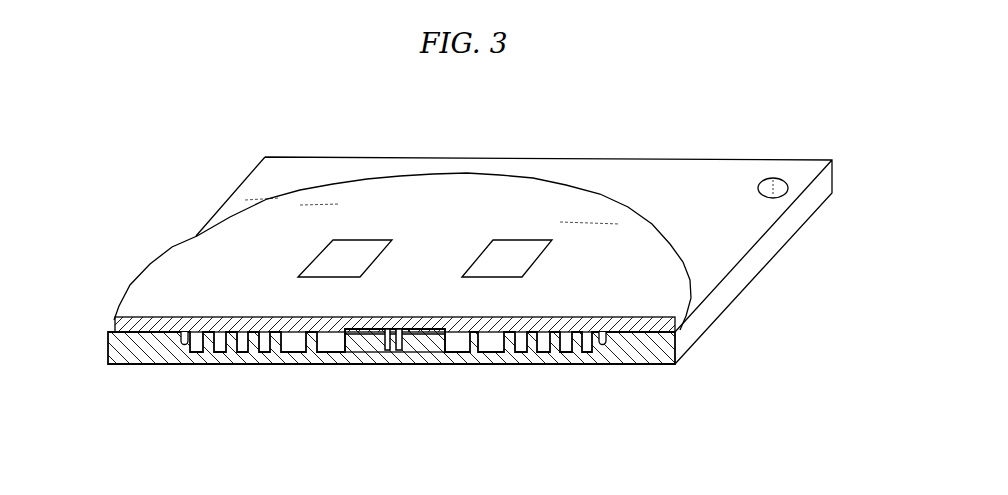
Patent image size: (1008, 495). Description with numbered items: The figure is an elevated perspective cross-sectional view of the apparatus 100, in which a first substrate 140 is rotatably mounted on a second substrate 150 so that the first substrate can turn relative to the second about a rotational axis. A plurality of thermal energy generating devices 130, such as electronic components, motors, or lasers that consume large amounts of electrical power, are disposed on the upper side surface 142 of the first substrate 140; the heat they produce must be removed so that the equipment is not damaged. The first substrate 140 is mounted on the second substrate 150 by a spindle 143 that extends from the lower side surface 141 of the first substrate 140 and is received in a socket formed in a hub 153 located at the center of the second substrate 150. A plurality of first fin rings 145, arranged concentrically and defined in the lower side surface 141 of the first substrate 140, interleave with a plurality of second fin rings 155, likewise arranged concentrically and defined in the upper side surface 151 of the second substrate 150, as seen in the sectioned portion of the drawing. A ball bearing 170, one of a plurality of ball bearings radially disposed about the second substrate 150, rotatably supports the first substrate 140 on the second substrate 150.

The apparatus 100 is at (600, 127).
The thermal energy generating devices 130 is at (360, 252).
The first substrate 140 is at (222, 312).
The lower side surface 141 is at (410, 317).
The upper side surface 142 is at (572, 212).
The spindle 143 is at (395, 364).
The first fin rings 145 is at (625, 415).
The second substrate 150 is at (716, 306).
The upper side surface 151 is at (735, 262).
The hub 153 is at (367, 364).
The second fin rings 155 is at (180, 318).
The ball bearing 170 is at (146, 365).